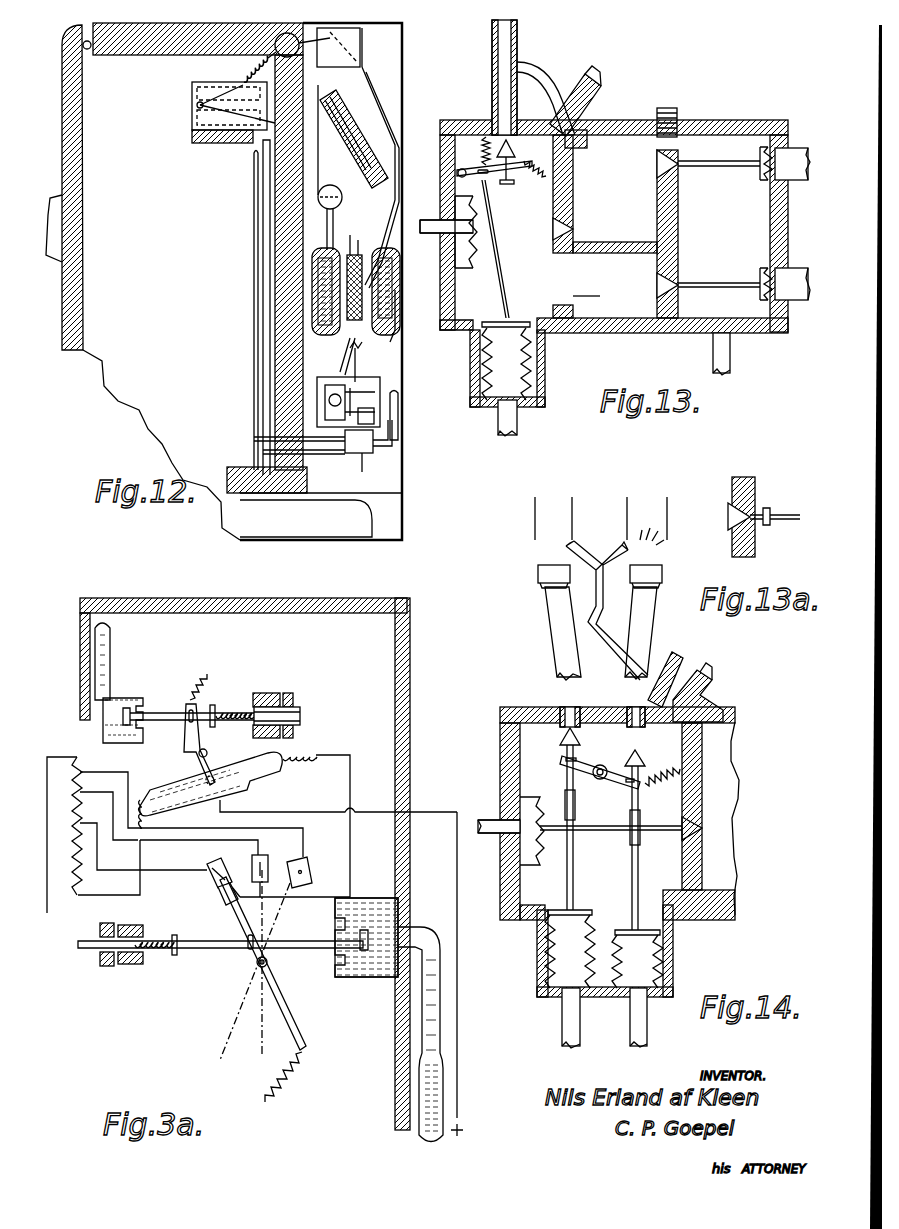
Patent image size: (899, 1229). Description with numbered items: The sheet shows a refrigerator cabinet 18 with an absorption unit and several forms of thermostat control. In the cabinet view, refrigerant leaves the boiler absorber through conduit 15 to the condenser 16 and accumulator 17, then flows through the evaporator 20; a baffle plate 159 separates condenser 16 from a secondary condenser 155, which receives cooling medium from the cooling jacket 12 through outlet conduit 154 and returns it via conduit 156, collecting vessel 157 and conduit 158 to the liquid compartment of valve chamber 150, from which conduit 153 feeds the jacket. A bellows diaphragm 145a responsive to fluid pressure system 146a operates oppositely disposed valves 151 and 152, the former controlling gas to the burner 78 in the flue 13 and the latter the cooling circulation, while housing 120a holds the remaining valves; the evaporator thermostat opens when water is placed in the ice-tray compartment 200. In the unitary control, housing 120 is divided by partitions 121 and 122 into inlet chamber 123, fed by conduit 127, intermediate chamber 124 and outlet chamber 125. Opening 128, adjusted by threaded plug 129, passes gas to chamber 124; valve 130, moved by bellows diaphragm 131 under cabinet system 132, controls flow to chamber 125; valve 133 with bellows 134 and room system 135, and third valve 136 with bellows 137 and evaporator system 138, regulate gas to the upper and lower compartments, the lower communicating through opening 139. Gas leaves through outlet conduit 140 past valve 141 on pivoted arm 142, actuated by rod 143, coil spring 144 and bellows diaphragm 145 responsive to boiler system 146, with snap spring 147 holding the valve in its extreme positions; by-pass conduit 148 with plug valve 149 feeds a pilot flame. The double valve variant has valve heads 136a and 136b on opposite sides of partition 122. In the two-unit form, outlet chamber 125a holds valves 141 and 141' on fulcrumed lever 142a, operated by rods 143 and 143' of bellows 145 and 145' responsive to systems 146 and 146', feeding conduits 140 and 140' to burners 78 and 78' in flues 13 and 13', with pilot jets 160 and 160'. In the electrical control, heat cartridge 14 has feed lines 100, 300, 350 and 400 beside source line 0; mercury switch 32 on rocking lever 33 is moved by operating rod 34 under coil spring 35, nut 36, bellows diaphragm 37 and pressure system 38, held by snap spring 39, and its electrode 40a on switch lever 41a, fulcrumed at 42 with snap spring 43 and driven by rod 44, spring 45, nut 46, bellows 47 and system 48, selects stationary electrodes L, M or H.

In FIG. 12, the cooling jacket 12 is at (396, 280).
In FIG. 12, the flue 13 is at (354, 267).
In FIG. 14, the flue 13 is at (553, 511).
In FIG. 14, the flue 13' is at (647, 509).
In FIG. 3A, the heating cartridge 14 is at (64, 835).
In FIG. 12, the conduit 15 is at (396, 208).
In FIG. 12, the condenser 16 is at (352, 30).
In FIG. 12, the accumulator 17 is at (287, 32).
In FIG. 12, the refrigerator cabinet 18 is at (150, 48).
In FIG. 3A, the refrigerator cabinet 18 is at (322, 613).
In FIG. 12, the evaporator 20 is at (198, 107).
In FIG. 3A, the mercury switch 32 is at (240, 792).
In FIG. 3A, the rocking lever 33 is at (205, 738).
In FIG. 3A, the operating rod 34 is at (160, 710).
In FIG. 3A, the coil spring 35 is at (235, 705).
In FIG. 3A, the threaded nut 36 is at (296, 698).
In FIG. 3A, the bellows diaphragm 37 is at (128, 695).
In FIG. 3A, the fluid pressure system 38 is at (111, 645).
In FIG. 3A, the snap spring 39 is at (200, 676).
In FIG. 3A, the electrode 40a is at (231, 874).
In FIG. 3A, the switch lever 41a is at (288, 992).
In FIG. 3A, the fulcrum 42 is at (268, 962).
In FIG. 3A, the snap spring 43 is at (285, 1077).
In FIG. 3A, the operating rod 44 is at (300, 940).
In FIG. 3A, the coil spring 45 is at (155, 935).
In FIG. 3A, the threaded nut 46 is at (104, 923).
In FIG. 3A, the bellows diaphragm 47 is at (365, 905).
In FIG. 3A, the fluid pressure system 48 is at (420, 1140).
In FIG. 12, the gas burner 78 is at (369, 345).
In FIG. 14, the gas burner 78 is at (536, 576).
In FIG. 14, the burner 78' is at (662, 574).
In FIG. 3A, the feed line 100 is at (109, 867).
In FIG. 3A, the feed line 300 is at (108, 838).
In FIG. 3A, the feed line 350 is at (109, 808).
In FIG. 3A, the feed line 400 is at (110, 792).
In FIG. 3A, the feed line 0 is at (45, 923).
In FIG. 13, the housing 120 is at (740, 120).
In FIG. 12, the housing 120a is at (323, 437).
In FIG. 13, the vertical partition 121 is at (566, 176).
In FIG. 14, the vertical partition 121 is at (702, 792).
In FIG. 13, the vertical partition 122 is at (678, 216).
In FIG. 13A, the vertical partition 122 is at (744, 478).
In FIG. 13, the inlet chamber 123 is at (724, 239).
In FIG. 13, the intermediate chamber 124 is at (614, 180).
In FIG. 13, the outlet chamber 125 is at (519, 210).
In FIG. 14, the gas outlet chamber 125a is at (597, 867).
In FIG. 12, the conduit 127 is at (379, 469).
In FIG. 13, the conduit 127 is at (731, 366).
In FIG. 13, the transverse opening 128 is at (686, 145).
In FIG. 13, the threaded plug 129 is at (672, 110).
In FIG. 13, the valve 130 is at (575, 228).
In FIG. 14, the valve 130 is at (694, 826).
In FIG. 13, the bellows diaphragm 131 is at (468, 268).
In FIG. 14, the bellows diaphragm 131 is at (540, 860).
In FIG. 12, the fluid pressure system 132 is at (254, 160).
In FIG. 13, the fluid pressure system 132 is at (428, 225).
In FIG. 14, the fluid pressure system 132 is at (490, 818).
In FIG. 13, the valve 133 is at (680, 180).
In FIG. 13, the bellows diaphragm 134 is at (760, 170).
In FIG. 12, the fluid pressure system 135 is at (399, 406).
In FIG. 13, the fluid pressure system 135 is at (798, 150).
In FIG. 13, the third valve 136 is at (668, 286).
In FIG. 13A, the valve head 136a is at (730, 512).
In FIG. 13A, the valve head 136b is at (772, 510).
In FIG. 13, the bellows diaphragm 137 is at (760, 268).
In FIG. 12, the fluid pressure system 138 is at (262, 148).
In FIG. 13, the fluid pressure system 138 is at (802, 300).
In FIG. 13, the transverse opening 139 is at (593, 300).
In FIG. 14, the transverse opening 139 is at (690, 880).
In FIG. 13, the outlet conduit 140 is at (510, 77).
In FIG. 14, the outlet conduit 140 is at (543, 657).
In FIG. 14, the second outlet conduit 140' is at (656, 657).
In FIG. 13, the valve 141 is at (522, 157).
In FIG. 14, the valve 141 is at (551, 739).
In FIG. 14, the valve 141' is at (648, 753).
In FIG. 12, the pivoted arm 142 is at (417, 160).
In FIG. 13, the pivoted arm 142 is at (470, 170).
In FIG. 14, the fulcrumed lever 142a is at (620, 767).
In FIG. 13, the rod 143 is at (509, 249).
In FIG. 14, the rod 143 is at (590, 827).
In FIG. 14, the operating rod 143' is at (653, 848).
In FIG. 13, the coil spring 144 is at (483, 137).
In FIG. 13, the bellows diaphragm 145 is at (529, 361).
In FIG. 14, the bellows diaphragm 145 is at (570, 949).
In FIG. 14, the second bellows diaphragm 145' is at (637, 959).
In FIG. 12, the bellows diaphragm 145a is at (382, 380).
In FIG. 13, the fluid pressure system 146 is at (534, 418).
In FIG. 14, the fluid pressure system 146 is at (544, 1018).
In FIG. 14, the fluid pressure system 146' is at (655, 1017).
In FIG. 12, the fluid pressure system 146a is at (413, 316).
In FIG. 13, the snap spring 147 is at (535, 176).
In FIG. 13, the by-pass conduit 148 is at (590, 141).
In FIG. 14, the by-pass conduit 148 is at (672, 660).
In FIG. 13, the threaded plug valve 149 is at (596, 88).
In FIG. 14, the threaded plug valve 149 is at (705, 668).
In FIG. 12, the valve chamber 150 is at (371, 421).
In FIG. 12, the valve 151 is at (370, 365).
In FIG. 12, the valve 152 is at (320, 405).
In FIG. 12, the conduit 153 is at (341, 356).
In FIG. 12, the outlet conduit 154 is at (343, 197).
In FIG. 12, the secondary condenser 155 is at (342, 142).
In FIG. 12, the conduit 156 is at (341, 133).
In FIG. 12, the collecting vessel 157 is at (319, 140).
In FIG. 12, the conduit 158 is at (317, 229).
In FIG. 12, the baffle plate 159 is at (377, 47).
In FIG. 14, the pilot jet 160 is at (615, 593).
In FIG. 14, the pilot jet 160' is at (607, 535).
In FIG. 12, the ice-tray compartment 200 is at (192, 95).
In FIG. 3A, the stationary electrode L is at (210, 866).
In FIG. 3A, the stationary electrode M is at (262, 855).
In FIG. 3A, the stationary electrode H is at (308, 860).